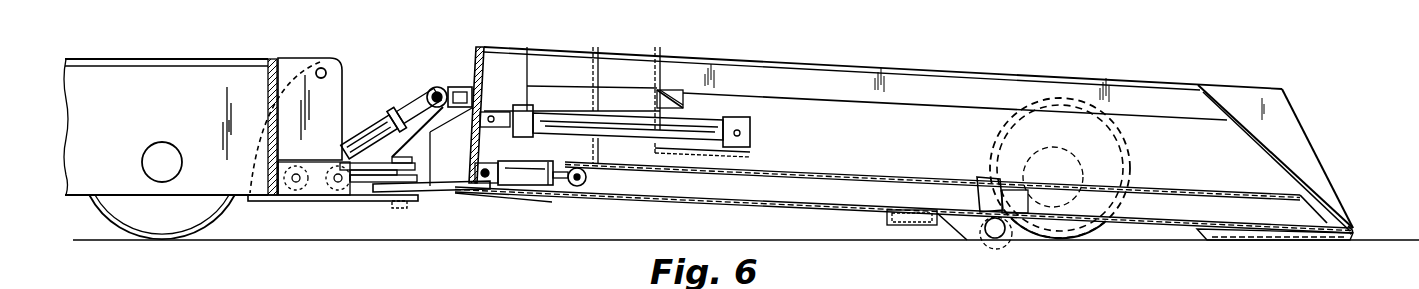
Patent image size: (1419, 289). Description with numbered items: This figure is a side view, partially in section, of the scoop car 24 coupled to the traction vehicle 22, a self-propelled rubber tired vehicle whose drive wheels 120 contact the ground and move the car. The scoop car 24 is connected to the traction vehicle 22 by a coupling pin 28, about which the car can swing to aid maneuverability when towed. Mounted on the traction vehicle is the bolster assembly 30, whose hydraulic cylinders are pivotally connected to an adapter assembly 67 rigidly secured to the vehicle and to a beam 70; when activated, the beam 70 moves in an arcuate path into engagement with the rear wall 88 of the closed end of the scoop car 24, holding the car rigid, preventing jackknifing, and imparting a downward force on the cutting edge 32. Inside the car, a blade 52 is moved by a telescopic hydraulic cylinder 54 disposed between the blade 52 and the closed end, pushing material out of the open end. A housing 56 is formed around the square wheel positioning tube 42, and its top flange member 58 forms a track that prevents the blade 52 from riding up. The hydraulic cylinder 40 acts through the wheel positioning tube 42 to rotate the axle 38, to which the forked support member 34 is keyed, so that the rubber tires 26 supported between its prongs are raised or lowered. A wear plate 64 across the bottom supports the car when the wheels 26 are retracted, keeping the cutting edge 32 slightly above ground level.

The traction vehicle 22 is at (172, 59).
The drive wheels 120 is at (222, 212).
The adapter assembly 67 is at (322, 66).
The bolster assembly 30 is at (366, 121).
The beam 70 is at (465, 87).
The coupling pin 28 is at (408, 154).
The rear wall 88 is at (488, 67).
The scoop car 24 is at (908, 155).
The blade 52 is at (665, 78).
The telescopic hydraulic cylinder 54 is at (566, 111).
The hydraulic cylinder 40 is at (528, 186).
The wheel positioning tube 42 is at (832, 185).
The flange member 58 is at (1182, 170).
The forked support member 34 is at (1017, 235).
The axle 38 is at (985, 240).
The wheels 26 is at (1103, 213).
The housing 56 is at (1232, 202).
The cutting edge 32 is at (1355, 228).
The wear plate 64 is at (1283, 240).